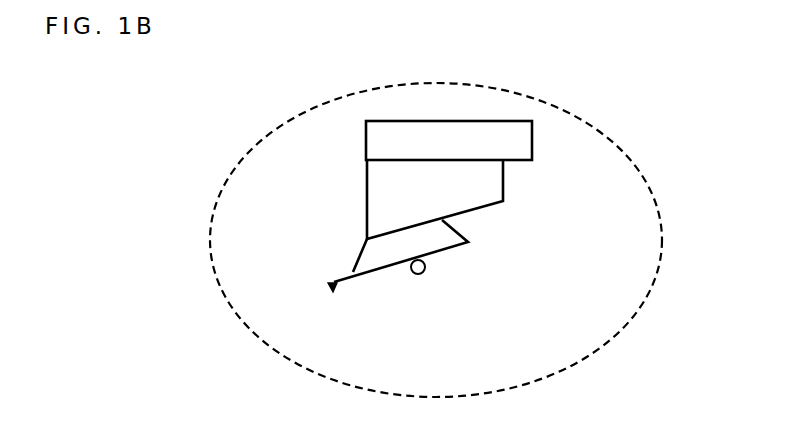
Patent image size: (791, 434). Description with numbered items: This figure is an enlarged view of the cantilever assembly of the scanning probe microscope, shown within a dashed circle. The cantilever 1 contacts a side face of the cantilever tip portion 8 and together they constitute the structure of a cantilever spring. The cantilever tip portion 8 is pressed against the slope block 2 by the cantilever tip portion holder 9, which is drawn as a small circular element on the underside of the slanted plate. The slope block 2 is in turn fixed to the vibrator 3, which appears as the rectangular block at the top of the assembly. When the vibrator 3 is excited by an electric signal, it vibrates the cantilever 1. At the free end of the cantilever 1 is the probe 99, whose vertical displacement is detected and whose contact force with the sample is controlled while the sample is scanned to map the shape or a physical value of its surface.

The cantilever 1 is at (381, 303).
The slope block 2 is at (475, 190).
The vibrator 3 is at (510, 132).
The cantilever tip portion 8 is at (447, 237).
The cantilever tip portion holder 9 is at (421, 274).
The probe 99 is at (330, 284).